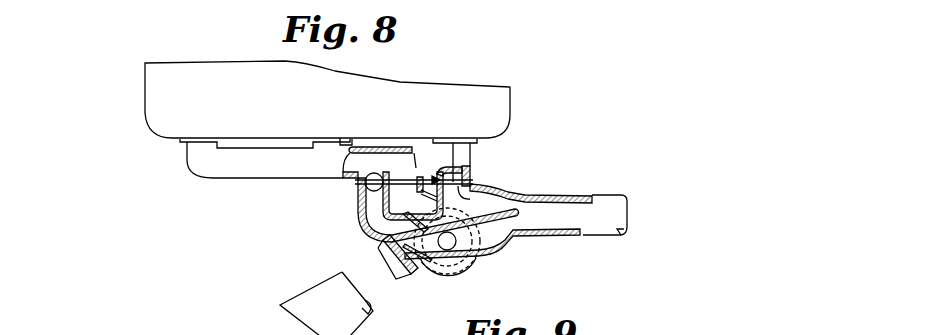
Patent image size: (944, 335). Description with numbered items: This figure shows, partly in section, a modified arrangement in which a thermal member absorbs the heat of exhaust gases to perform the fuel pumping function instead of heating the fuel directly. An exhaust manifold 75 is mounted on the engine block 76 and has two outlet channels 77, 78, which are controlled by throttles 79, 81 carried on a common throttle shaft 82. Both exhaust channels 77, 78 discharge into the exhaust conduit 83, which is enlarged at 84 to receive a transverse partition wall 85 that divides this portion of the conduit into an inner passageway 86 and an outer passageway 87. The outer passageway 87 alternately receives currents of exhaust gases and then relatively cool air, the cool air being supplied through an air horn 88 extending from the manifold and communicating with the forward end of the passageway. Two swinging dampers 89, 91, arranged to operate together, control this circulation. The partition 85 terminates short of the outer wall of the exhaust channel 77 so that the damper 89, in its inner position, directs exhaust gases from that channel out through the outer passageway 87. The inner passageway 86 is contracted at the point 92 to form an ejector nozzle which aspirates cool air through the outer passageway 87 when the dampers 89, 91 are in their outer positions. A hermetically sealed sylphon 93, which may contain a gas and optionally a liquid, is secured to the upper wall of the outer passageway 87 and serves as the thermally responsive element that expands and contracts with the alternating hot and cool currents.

The exhaust manifold 75 is at (283, 166).
The engine block 76 is at (165, 98).
The outlet channel 77 is at (372, 200).
The outlet channel 78 is at (482, 186).
The throttle 79 is at (374, 175).
The throttle 81 is at (455, 181).
The throttle shaft 82 is at (402, 180).
The exhaust conduit 83 is at (597, 208).
The enlarged portion of exhaust conduit 84 is at (490, 259).
The partition wall 85 is at (497, 243).
The inner passageway 86 is at (467, 210).
The outer passageway 87 is at (480, 248).
The air horn 88 is at (380, 252).
The swinging damper 89 is at (412, 219).
The swinging damper 91 is at (402, 260).
The contracted point 92 is at (518, 210).
The sylphon 93 is at (447, 245).